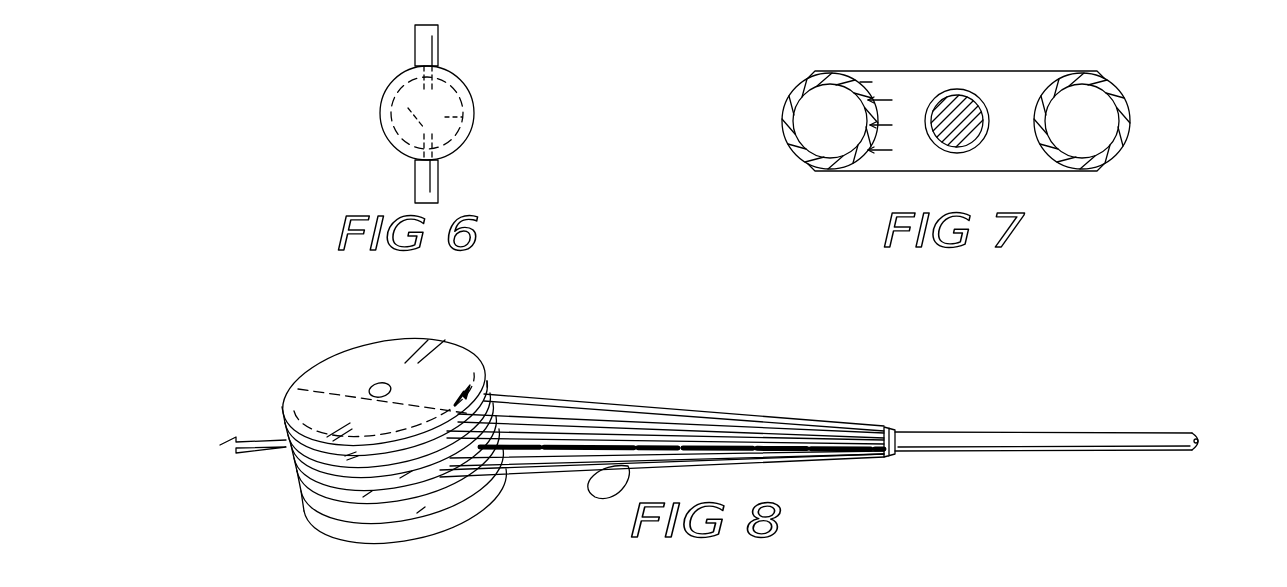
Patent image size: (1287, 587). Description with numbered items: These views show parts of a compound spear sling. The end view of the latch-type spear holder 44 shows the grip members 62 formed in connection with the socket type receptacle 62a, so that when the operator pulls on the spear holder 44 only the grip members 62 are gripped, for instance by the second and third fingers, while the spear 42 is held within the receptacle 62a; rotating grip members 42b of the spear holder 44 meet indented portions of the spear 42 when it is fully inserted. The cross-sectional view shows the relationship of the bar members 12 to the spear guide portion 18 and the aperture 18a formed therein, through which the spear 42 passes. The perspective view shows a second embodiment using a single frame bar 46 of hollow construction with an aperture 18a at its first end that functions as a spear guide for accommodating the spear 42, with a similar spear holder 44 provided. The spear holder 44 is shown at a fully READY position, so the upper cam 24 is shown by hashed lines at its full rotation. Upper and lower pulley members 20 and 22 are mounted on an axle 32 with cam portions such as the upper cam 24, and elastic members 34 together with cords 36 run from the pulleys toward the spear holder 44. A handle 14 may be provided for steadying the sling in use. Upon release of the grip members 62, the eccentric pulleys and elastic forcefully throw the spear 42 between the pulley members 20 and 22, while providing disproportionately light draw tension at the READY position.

In FIG. 7, the bar members 12 is at (790, 100).
In FIG. 8, the handle 14 is at (613, 483).
In FIG. 7, the spear guide portion 18 is at (880, 76).
In FIG. 7, the aperture 18a is at (955, 88).
In FIG. 8, the aperture 18a is at (897, 433).
In FIG. 8, the upper pulley member 20 is at (460, 362).
In FIG. 8, the lower pulley member 22 is at (443, 530).
In FIG. 8, the upper cam 24 is at (325, 365).
In FIG. 8, the axle 32 is at (382, 382).
In FIG. 8, the elastic members 34 is at (598, 423).
In FIG. 8, the cord 36 is at (525, 397).
In FIG. 7, the spear 42 is at (973, 133).
In FIG. 8, the spear 42 is at (965, 438).
In FIG. 6, the rotating grip members 42b is at (390, 93).
In FIG. 8, the spear holder 44 is at (1203, 446).
In FIG. 8, the single frame bar 46 is at (713, 443).
In FIG. 6, the grip members 62 is at (435, 48).
In FIG. 6, the socket type receptacle 62a is at (472, 115).